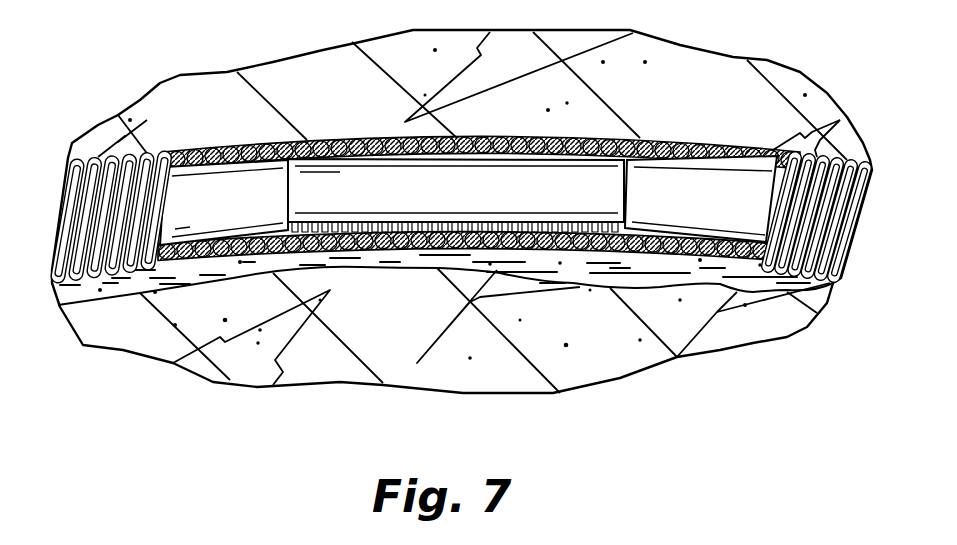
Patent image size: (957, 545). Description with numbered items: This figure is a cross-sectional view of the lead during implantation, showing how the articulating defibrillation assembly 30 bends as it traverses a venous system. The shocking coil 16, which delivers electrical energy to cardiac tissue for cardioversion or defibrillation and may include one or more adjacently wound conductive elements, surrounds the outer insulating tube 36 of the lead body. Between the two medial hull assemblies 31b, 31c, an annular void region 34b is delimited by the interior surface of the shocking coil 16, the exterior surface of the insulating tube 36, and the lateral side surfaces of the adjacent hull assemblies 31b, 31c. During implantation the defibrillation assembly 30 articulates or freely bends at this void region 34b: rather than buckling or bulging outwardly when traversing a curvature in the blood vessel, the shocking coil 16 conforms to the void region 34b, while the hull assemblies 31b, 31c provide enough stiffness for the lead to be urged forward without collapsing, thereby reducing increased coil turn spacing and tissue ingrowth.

The shocking coil 16 is at (197, 152).
The defibrillation assembly 30 is at (653, 120).
The medial hull assembly 31b is at (233, 211).
The medial hull assembly 31c is at (710, 210).
The annular void region 34b is at (378, 236).
The outer insulating tube 36 is at (478, 201).